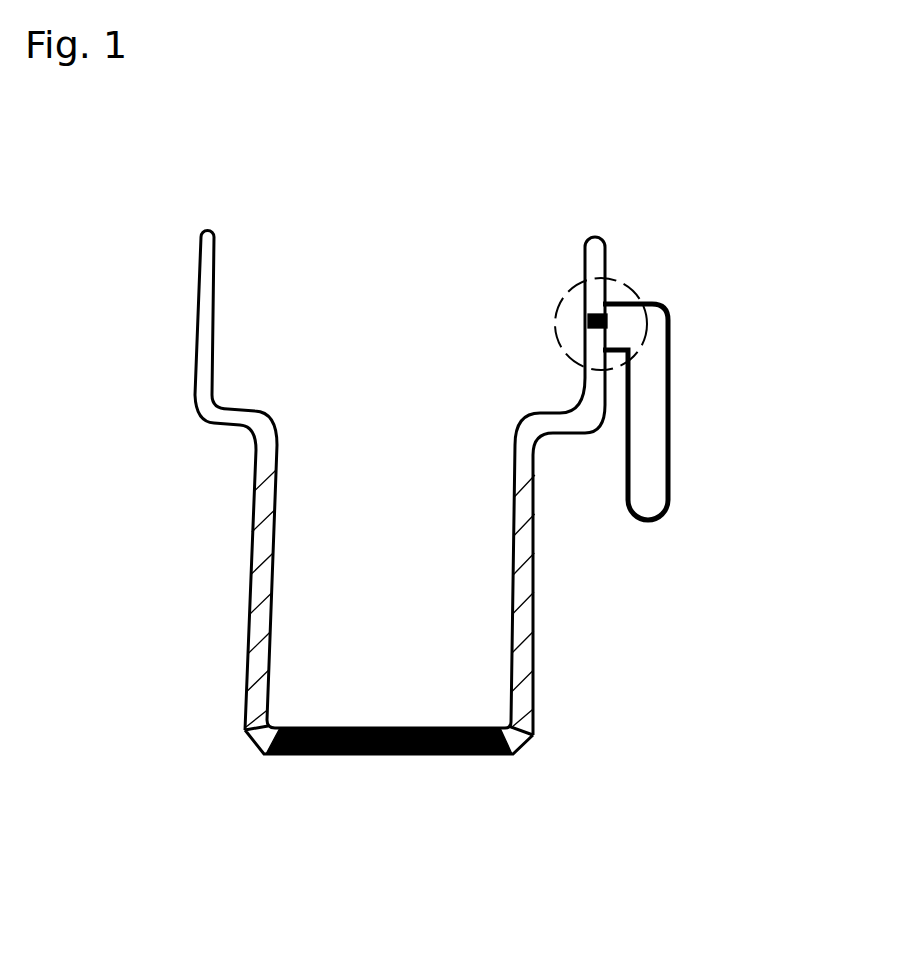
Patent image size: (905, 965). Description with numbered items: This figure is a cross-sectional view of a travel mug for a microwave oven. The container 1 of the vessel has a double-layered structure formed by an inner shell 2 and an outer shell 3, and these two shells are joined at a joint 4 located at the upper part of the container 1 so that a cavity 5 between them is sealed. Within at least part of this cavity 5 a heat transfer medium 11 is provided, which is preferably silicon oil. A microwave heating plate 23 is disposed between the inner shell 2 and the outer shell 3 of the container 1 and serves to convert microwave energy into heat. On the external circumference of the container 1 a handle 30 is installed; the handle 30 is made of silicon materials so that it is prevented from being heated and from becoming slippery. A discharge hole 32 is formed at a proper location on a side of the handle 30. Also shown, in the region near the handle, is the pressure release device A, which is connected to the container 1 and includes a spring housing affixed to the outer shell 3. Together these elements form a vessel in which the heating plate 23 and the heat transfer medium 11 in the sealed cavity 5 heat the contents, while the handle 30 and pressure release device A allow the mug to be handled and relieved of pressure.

The container 1 is at (359, 494).
The inner shell 2 is at (216, 393).
The outer shell 3 is at (197, 416).
The joint 4 is at (211, 227).
The cavity 5 is at (216, 262).
The heat transfer medium 11 is at (527, 587).
The microwave heating plate 23 is at (374, 765).
The handle 30 is at (655, 420).
The discharge hole 32 is at (616, 316).
The pressure release device A is at (645, 298).